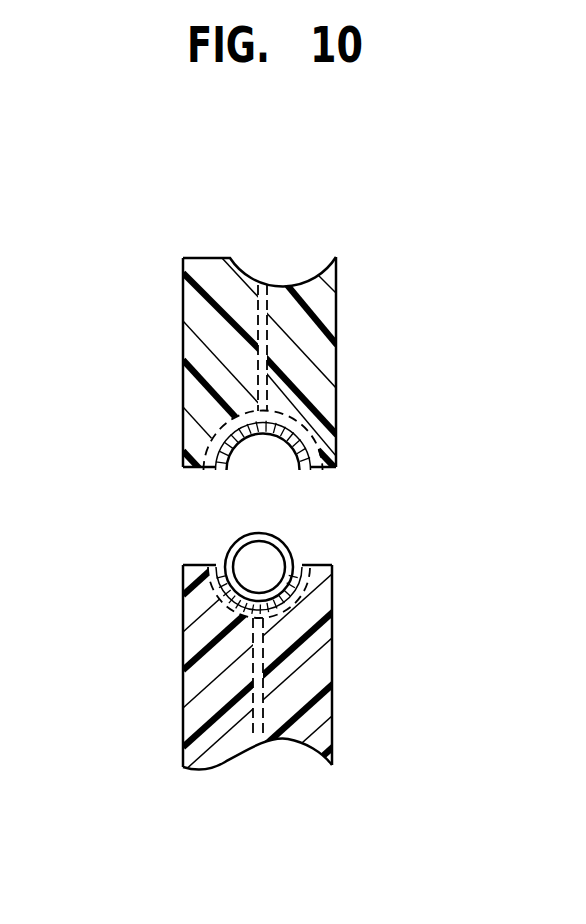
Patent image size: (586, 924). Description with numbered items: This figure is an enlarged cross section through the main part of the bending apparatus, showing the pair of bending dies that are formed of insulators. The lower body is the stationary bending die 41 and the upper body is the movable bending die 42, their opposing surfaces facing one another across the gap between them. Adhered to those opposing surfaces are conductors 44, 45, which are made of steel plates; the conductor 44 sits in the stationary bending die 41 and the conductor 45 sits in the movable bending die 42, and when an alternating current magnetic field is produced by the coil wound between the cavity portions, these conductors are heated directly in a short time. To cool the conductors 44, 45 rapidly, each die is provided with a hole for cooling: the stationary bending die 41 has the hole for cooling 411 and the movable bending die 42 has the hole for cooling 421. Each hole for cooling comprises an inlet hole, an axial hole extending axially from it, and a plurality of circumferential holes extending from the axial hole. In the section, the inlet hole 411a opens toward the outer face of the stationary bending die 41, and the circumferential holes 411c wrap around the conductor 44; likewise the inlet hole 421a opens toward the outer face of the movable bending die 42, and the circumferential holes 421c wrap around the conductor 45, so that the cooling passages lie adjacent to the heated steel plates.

The stationary bending die 41 is at (183, 692).
The hole for cooling 411 is at (249, 672).
The inlet hole 411a is at (256, 707).
The circumferential holes 411c is at (305, 589).
The movable bending die 42 is at (183, 330).
The hole for cooling 421 is at (293, 378).
The inlet hole 421a is at (265, 322).
The circumferential holes 421c is at (308, 435).
The conductor 44 is at (205, 580).
The conductor 45 is at (242, 450).